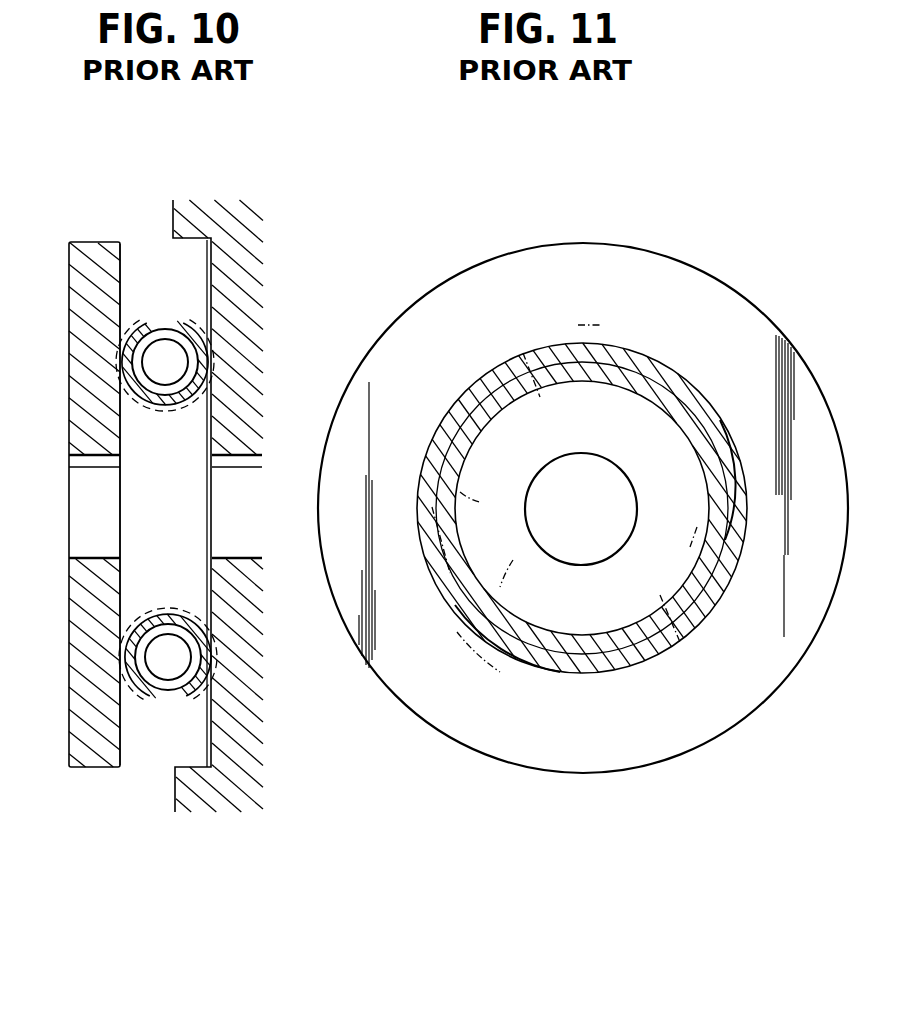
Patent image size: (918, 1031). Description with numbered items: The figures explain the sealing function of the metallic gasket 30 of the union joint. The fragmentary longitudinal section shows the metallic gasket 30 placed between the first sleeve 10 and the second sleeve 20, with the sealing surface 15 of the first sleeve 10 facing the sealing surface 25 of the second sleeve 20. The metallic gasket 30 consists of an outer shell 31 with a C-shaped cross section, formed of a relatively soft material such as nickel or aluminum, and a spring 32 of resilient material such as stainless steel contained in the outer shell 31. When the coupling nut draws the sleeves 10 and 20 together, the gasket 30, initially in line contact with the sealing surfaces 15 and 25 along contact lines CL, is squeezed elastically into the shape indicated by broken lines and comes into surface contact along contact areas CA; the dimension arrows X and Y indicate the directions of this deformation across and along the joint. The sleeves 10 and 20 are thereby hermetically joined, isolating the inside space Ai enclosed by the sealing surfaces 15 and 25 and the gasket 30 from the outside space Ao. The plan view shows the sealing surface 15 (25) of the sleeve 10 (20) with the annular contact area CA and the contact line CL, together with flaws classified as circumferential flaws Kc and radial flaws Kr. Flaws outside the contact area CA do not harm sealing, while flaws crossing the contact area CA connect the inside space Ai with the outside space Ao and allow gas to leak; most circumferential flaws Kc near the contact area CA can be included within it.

In FIG. 10, the first sleeve 10 is at (80, 239).
In FIG. 11, the first sleeve 10 is at (578, 243).
In FIG. 10, the sealing surface 15 is at (128, 241).
In FIG. 11, the sealing surface 15 is at (680, 278).
In FIG. 10, the second sleeve 20 is at (224, 195).
In FIG. 10, the sealing surface 25 is at (205, 292).
In FIG. 10, the metallic gasket 30 is at (166, 609).
In FIG. 10, the outer shell 31 is at (147, 700).
In FIG. 10, the spring 32 is at (168, 696).
In FIG. 10, the outside space Ao is at (147, 263).
In FIG. 11, the outside space Ao is at (603, 748).
In FIG. 10, the inside space Ai is at (152, 567).
In FIG. 11, the inside space Ai is at (572, 622).
In FIG. 10, the radial dimension X is at (117, 508).
In FIG. 10, the axial dimension Y is at (165, 479).
In FIG. 11, the circumferential flaws Kc is at (578, 325).
In FIG. 11, the radial flaws Kr is at (518, 349).
In FIG. 11, the contact area CA is at (720, 606).
In FIG. 11, the contact line CL is at (732, 576).